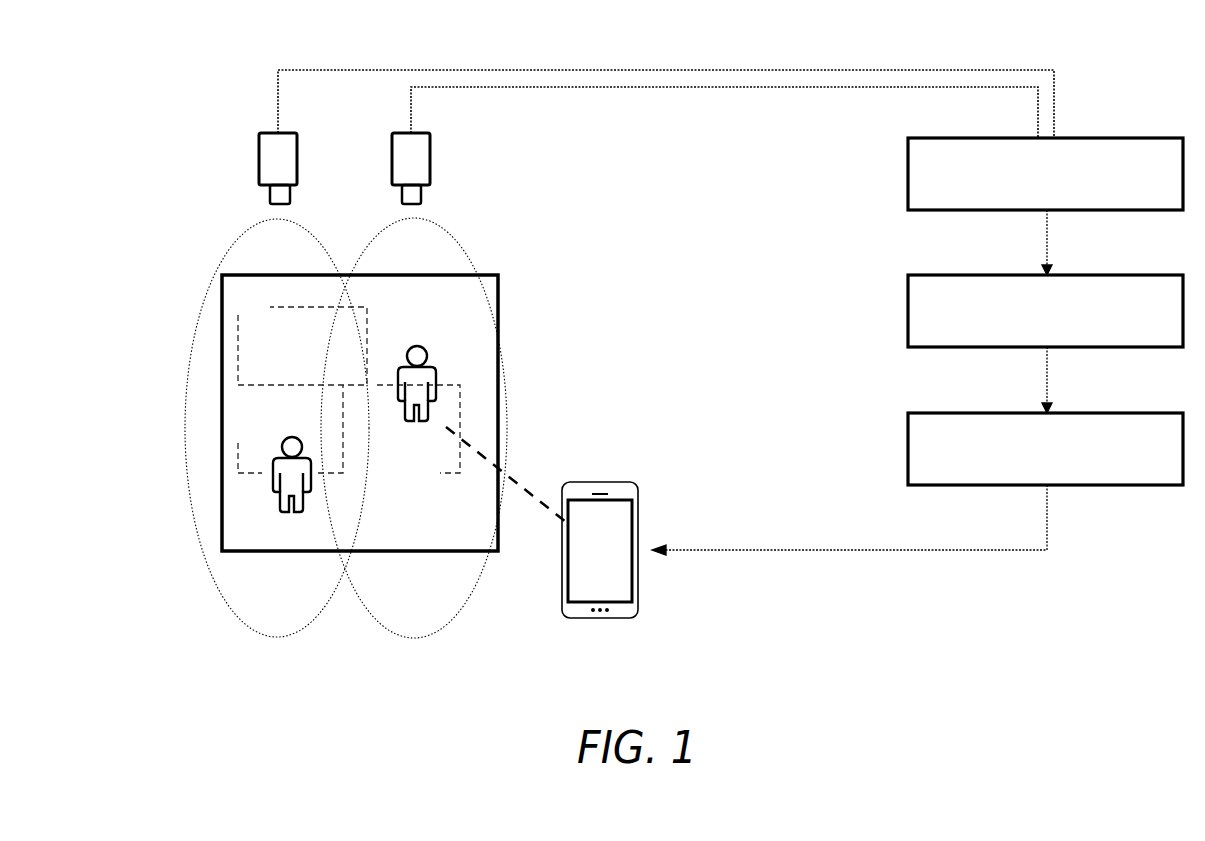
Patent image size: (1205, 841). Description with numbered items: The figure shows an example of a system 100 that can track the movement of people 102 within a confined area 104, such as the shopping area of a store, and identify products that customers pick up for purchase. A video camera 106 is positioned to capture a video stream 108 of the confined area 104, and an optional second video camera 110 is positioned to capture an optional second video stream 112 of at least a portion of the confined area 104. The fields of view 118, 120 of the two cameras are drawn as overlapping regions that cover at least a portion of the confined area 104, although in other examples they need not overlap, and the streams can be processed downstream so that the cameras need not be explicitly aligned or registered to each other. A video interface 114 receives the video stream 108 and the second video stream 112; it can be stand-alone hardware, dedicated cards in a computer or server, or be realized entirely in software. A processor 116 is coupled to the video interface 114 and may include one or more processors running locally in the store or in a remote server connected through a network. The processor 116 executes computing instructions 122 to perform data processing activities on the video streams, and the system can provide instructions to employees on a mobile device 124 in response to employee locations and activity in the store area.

The system 100 is at (230, 43).
The people 102 is at (416, 425).
The confined area 104 is at (500, 281).
The video camera 106 is at (258, 162).
The video stream 108 is at (631, 68).
The second video camera 110 is at (432, 158).
The second video stream 112 is at (638, 88).
The video interface 114 is at (906, 178).
The processor 116 is at (906, 314).
The field of view 118 is at (187, 472).
The field of view 120 is at (507, 430).
The instructions 122 is at (906, 452).
The mobile device 124 is at (602, 620).